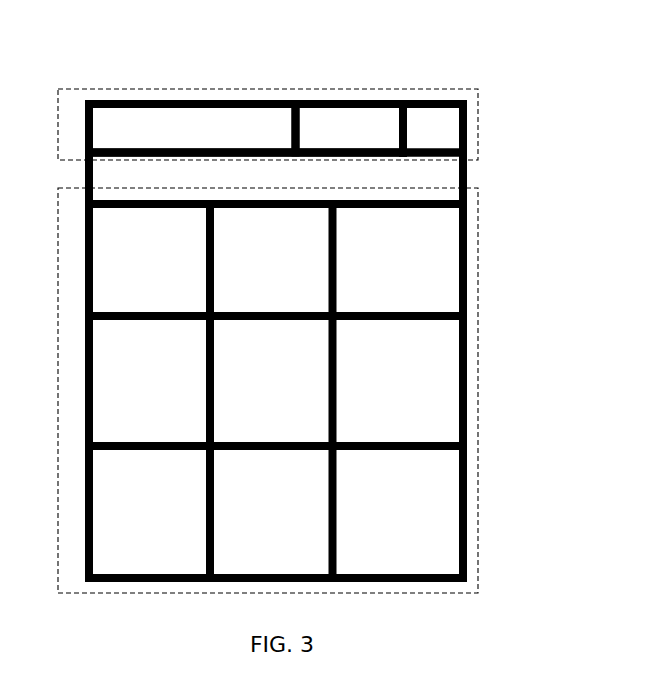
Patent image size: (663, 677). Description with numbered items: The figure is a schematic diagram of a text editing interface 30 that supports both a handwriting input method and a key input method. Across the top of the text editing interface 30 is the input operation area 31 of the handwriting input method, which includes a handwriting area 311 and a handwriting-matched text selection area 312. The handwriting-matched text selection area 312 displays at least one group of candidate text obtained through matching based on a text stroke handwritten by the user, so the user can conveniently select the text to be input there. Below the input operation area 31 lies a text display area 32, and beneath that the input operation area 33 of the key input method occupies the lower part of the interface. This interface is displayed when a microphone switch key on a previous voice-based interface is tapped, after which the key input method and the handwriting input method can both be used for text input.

The text editing interface 30 is at (270, 58).
The input operation area of the handwriting input method 31 is at (480, 133).
The handwriting area 311 is at (348, 120).
The handwriting-matched text selection area 312 is at (185, 127).
The text display area 32 is at (138, 178).
The input operation area of the key input method 33 is at (480, 343).